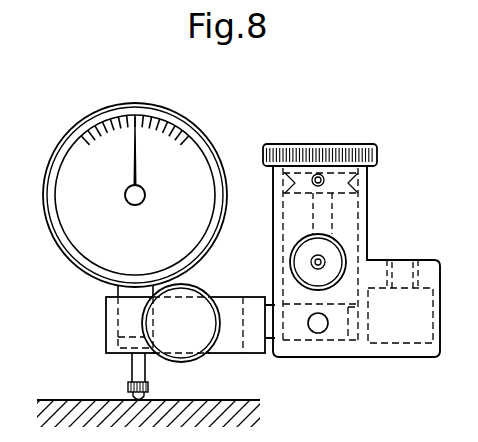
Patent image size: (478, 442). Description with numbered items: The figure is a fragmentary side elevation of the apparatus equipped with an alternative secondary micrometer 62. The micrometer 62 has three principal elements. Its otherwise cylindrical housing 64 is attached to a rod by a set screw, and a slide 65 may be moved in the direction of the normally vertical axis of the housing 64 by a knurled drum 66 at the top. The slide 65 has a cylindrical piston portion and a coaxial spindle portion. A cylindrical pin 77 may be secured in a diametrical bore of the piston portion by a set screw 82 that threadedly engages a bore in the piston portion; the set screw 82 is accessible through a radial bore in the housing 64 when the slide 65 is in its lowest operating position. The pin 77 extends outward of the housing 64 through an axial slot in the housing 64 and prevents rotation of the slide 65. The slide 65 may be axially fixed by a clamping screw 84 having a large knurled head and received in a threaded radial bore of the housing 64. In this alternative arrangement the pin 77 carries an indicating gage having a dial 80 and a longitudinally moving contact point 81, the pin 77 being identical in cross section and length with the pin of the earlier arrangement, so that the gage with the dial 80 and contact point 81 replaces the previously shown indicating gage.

The micrometer 62 is at (376, 199).
The housing 64 is at (377, 268).
The slide 65 is at (302, 293).
The knurled drum 66 is at (332, 153).
The pin 77 is at (271, 340).
The dial 80 is at (85, 238).
The contact point 81 is at (135, 370).
The set screw 82 is at (318, 331).
The clamping screw 84 is at (303, 262).